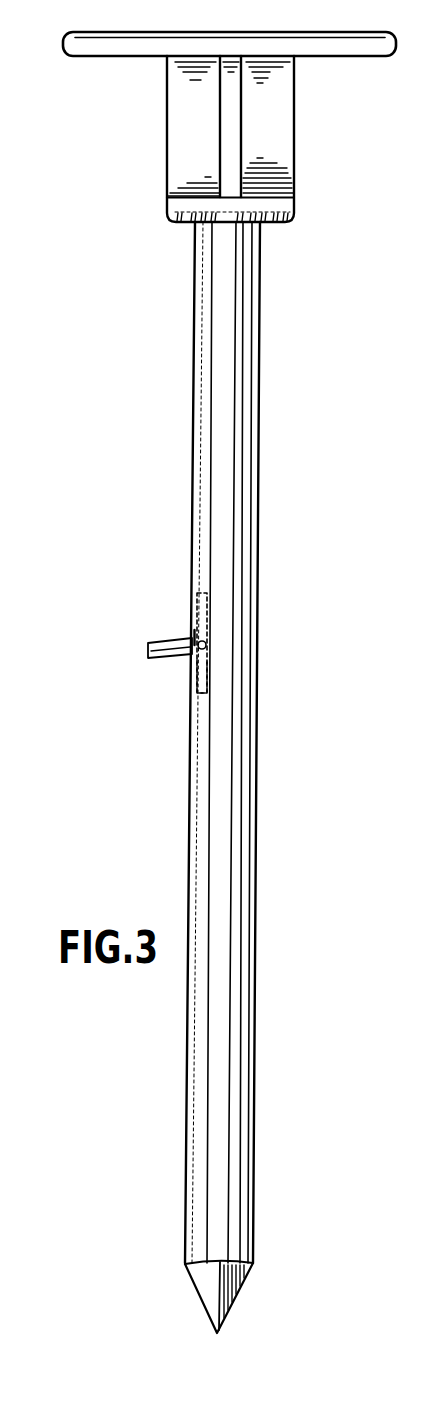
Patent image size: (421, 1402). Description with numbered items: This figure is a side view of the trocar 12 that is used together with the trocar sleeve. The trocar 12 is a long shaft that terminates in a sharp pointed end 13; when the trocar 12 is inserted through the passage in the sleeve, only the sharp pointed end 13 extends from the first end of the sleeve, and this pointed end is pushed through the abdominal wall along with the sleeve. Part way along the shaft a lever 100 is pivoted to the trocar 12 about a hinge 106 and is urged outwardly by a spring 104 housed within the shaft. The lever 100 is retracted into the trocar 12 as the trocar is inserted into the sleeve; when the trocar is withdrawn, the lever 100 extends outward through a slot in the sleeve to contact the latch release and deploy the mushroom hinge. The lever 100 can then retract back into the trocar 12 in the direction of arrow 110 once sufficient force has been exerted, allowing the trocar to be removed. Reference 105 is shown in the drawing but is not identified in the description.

The trocar 12 is at (259, 800).
The sharp pointed end 13 is at (238, 1297).
The lever 100 is at (147, 649).
The spring 104 is at (212, 606).
The opening 105 is at (188, 596).
The hinge 106 is at (206, 645).
The arrow 110 is at (180, 680).